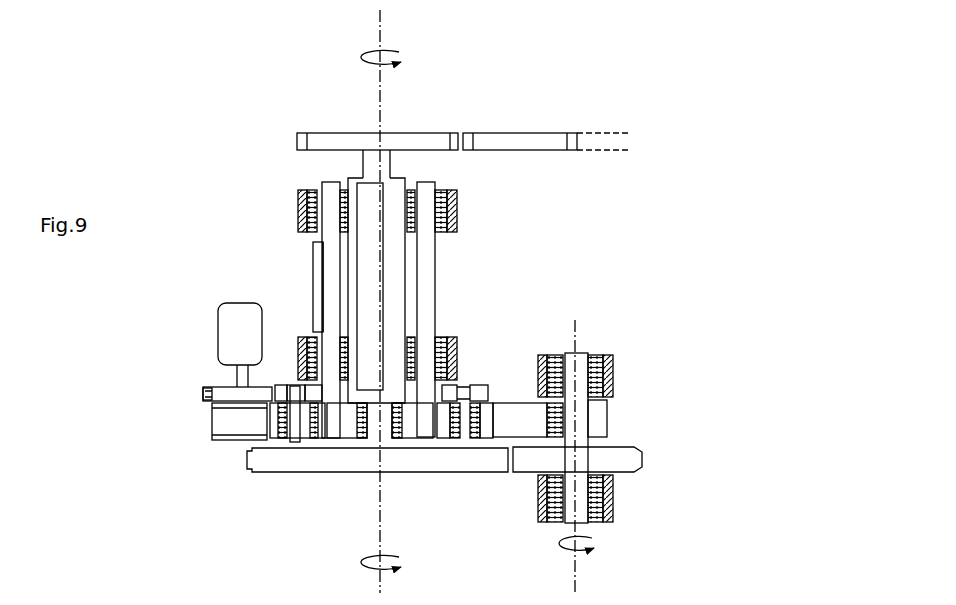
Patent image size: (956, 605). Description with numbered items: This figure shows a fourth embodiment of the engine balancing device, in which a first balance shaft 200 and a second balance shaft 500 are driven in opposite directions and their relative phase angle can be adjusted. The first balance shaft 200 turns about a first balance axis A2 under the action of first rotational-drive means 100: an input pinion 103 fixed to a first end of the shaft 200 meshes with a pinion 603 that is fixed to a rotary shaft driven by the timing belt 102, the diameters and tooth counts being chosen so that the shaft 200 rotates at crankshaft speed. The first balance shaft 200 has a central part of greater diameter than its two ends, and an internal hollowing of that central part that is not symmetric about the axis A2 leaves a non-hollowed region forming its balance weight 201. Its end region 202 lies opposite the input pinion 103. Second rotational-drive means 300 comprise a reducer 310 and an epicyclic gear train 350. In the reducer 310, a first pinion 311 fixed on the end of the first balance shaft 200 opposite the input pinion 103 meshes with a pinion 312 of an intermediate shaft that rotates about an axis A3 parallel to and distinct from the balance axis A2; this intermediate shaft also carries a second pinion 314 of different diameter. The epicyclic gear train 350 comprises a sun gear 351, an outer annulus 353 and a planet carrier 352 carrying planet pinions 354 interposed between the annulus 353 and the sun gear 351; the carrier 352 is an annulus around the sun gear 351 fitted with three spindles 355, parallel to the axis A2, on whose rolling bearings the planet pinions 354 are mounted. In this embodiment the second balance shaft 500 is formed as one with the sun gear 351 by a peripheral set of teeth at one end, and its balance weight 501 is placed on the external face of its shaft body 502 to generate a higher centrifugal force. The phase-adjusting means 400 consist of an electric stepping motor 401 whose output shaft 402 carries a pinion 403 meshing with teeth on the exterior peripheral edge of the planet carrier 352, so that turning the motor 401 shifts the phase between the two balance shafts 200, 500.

The first rotational-drive means 100 is at (577, 64).
The timing belt 102 is at (614, 138).
The input pinion 103 is at (430, 133).
The pinion 603 is at (556, 140).
The first balance shaft 200 is at (412, 268).
The balance weight 201 is at (396, 290).
The shaft end 202 is at (370, 133).
The second balance shaft 500 is at (450, 246).
The balance weight 501 is at (314, 254).
The shaft body 502 is at (332, 293).
The second rotational-drive means 300 is at (180, 563).
The reducer 310 is at (246, 470).
The first pinion 311 is at (276, 460).
The pinion 312 is at (624, 460).
The pinion 314 is at (600, 412).
The epicyclic gear train 350 is at (208, 444).
The sun gear 351 is at (426, 446).
The planet carrier 352 is at (490, 392).
The outer annulus 353 is at (527, 428).
The planet pinion 354 is at (460, 407).
The spindle 355 is at (300, 360).
The means for adjusting the phase angle 400 is at (210, 320).
The electric stepping motor 401 is at (228, 303).
The output shaft 402 is at (232, 384).
The pinion 403 is at (204, 394).
The first balance axis A2 is at (390, 26).
The axis A3 is at (588, 574).